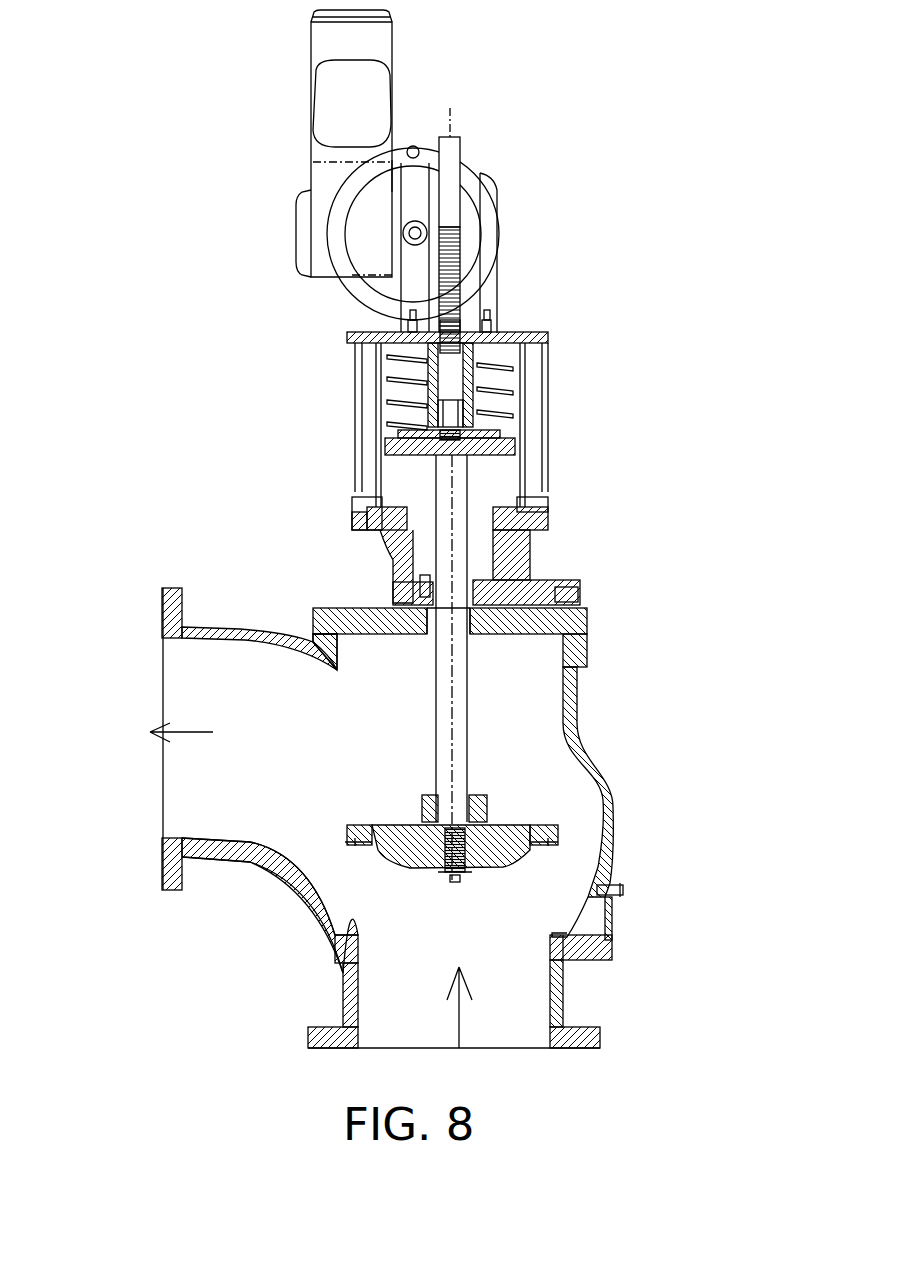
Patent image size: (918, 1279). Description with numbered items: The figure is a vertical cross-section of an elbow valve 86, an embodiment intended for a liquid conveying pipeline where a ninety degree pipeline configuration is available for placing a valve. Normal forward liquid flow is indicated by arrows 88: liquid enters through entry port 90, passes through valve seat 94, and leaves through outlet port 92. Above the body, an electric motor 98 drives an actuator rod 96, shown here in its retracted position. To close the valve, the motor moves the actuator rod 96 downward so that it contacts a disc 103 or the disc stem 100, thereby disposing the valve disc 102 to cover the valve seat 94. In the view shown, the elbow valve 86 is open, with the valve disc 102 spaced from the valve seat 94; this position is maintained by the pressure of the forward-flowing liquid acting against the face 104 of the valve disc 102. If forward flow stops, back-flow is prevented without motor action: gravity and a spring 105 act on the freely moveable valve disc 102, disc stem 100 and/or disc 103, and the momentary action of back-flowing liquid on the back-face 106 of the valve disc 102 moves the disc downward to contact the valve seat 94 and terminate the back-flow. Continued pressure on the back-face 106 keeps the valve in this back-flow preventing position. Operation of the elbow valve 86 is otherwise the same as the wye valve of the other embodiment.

The elbow valve 86 is at (155, 408).
The arrows 88 is at (193, 731).
The entry port 90 is at (497, 1050).
The outlet port 92 is at (160, 803).
The valve seat 94 is at (347, 934).
The actuator rod 96 is at (435, 386).
The electric motor 98 is at (495, 150).
The disc stem 100 is at (470, 491).
The valve disc 102 is at (513, 867).
The disc 103 is at (483, 445).
The face 104 is at (418, 870).
The spring 105 is at (517, 400).
The back-face 106 is at (390, 822).